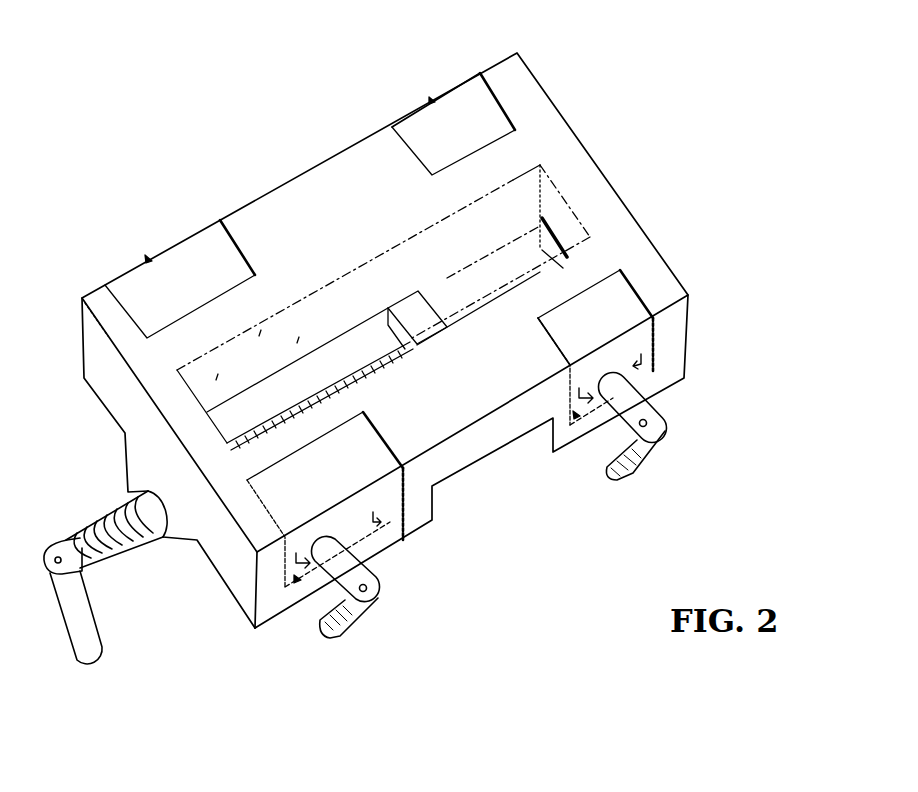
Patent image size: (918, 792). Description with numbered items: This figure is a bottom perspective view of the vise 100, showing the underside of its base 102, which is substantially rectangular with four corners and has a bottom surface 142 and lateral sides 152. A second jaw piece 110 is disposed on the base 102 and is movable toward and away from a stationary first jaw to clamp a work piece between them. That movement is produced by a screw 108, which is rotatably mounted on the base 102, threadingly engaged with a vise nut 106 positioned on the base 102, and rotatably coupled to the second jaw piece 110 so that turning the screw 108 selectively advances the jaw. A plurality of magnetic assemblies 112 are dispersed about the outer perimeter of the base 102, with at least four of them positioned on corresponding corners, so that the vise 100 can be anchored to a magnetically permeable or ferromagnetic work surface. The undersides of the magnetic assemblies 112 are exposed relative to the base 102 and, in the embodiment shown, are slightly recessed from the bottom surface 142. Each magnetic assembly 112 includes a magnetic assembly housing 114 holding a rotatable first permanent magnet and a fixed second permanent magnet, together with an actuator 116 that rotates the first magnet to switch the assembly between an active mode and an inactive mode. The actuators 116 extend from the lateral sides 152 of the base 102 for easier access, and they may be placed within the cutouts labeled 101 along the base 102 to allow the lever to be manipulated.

The vise 100 is at (222, 137).
The slot insert strip 101 is at (542, 246).
The base 102 is at (232, 596).
The vise nut 106 is at (163, 537).
The screw 108 is at (97, 517).
The second jaw piece 110 is at (433, 303).
The magnetic assembly 112 is at (148, 258).
The magnetic assembly housing 114 is at (175, 255).
The actuator 116 is at (380, 594).
The bottom surface 142 is at (538, 128).
The lateral sides 152 is at (675, 330).